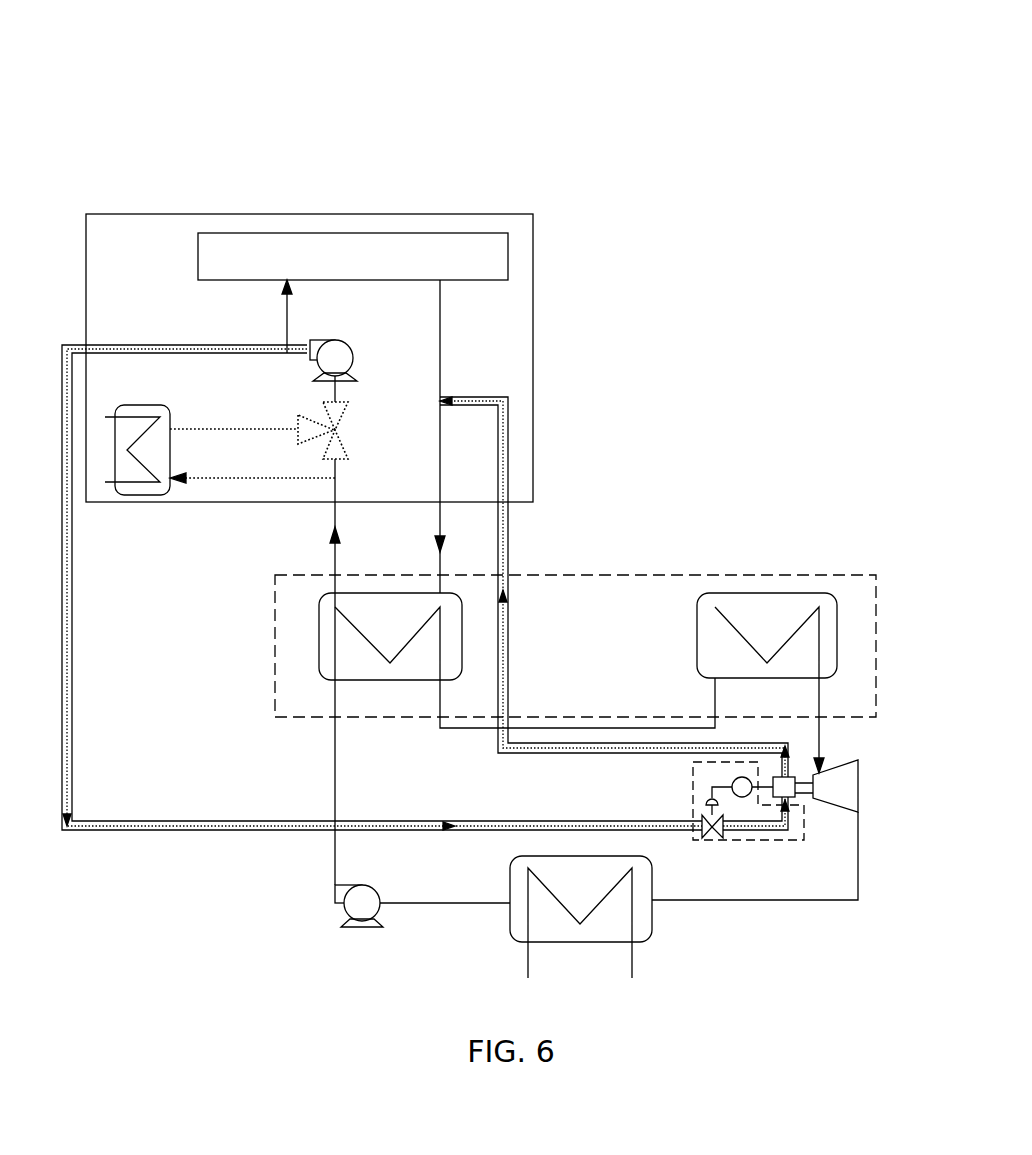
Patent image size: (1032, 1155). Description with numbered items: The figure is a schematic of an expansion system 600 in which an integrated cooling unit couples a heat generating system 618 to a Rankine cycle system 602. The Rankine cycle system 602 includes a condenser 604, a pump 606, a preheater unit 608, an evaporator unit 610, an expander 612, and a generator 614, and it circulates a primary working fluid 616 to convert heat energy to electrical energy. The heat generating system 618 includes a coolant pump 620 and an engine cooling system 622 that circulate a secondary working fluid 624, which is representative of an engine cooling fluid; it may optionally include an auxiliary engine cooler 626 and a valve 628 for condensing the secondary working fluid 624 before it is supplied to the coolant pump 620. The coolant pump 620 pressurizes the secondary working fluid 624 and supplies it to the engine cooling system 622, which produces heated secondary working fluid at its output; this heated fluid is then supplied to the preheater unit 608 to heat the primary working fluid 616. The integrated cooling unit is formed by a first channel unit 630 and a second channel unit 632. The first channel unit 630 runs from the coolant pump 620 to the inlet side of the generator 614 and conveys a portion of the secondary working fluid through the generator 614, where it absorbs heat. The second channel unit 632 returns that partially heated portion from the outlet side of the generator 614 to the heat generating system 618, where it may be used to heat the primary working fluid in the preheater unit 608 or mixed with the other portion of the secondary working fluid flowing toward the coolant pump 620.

The expansion system 600 is at (716, 97).
The Rankine cycle system 602 is at (418, 934).
The condenser 604 is at (580, 942).
The pump 606 is at (345, 921).
The preheater unit 608 is at (319, 638).
The evaporator unit 610 is at (697, 635).
The expander 612 is at (838, 762).
The generator 614 is at (773, 786).
The primary working fluid 616 is at (336, 776).
The heat generating system 618 is at (147, 214).
The coolant pump 620 is at (342, 347).
The engine cooling system 622 is at (363, 233).
The secondary working fluid 624 is at (287, 335).
The auxiliary engine cooler 626 is at (145, 405).
The valve 628 is at (346, 446).
The first channel unit 630 is at (73, 640).
The second channel unit 632 is at (508, 547).